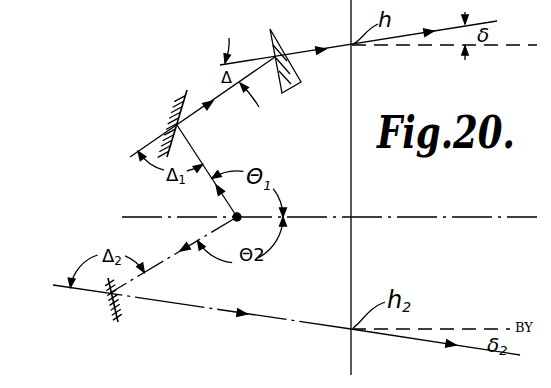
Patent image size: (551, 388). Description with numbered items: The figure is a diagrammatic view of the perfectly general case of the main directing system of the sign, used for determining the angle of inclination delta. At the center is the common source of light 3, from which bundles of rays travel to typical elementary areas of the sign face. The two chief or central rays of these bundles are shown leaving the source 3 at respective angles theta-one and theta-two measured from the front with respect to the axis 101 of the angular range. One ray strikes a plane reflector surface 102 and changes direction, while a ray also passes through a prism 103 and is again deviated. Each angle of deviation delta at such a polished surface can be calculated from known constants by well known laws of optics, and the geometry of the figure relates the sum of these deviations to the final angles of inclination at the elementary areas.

The common source of light 3 is at (233, 215).
The axis of the angular range 101 is at (446, 218).
The plane reflector surface 102 is at (182, 95).
The prism 103 is at (284, 44).